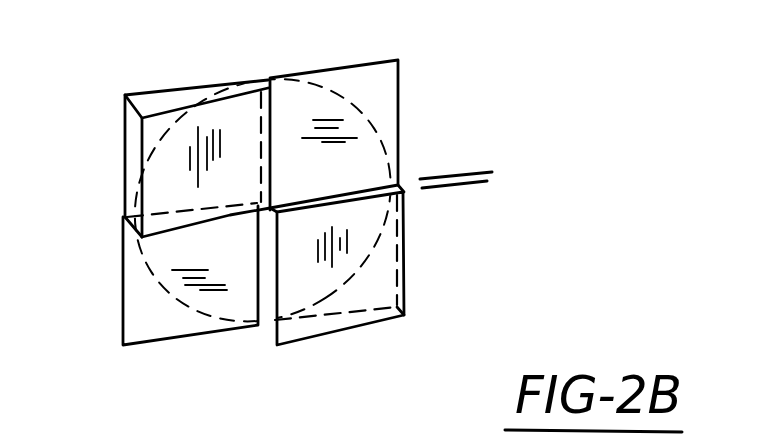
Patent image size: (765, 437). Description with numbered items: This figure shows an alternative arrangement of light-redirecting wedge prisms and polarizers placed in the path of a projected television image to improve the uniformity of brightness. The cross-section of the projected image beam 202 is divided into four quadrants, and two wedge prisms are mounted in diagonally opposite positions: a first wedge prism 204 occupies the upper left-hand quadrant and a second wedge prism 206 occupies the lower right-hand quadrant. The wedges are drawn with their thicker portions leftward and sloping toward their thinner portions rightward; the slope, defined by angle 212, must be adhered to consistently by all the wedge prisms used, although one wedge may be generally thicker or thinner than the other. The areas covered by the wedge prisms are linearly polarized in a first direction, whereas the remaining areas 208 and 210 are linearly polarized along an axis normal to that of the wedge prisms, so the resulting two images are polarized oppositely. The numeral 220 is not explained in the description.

The projected image beam 202 is at (362, 260).
The first wedge prism 204 is at (187, 93).
The second wedge prism 206 is at (319, 332).
The area 208 is at (375, 88).
The area 210 is at (157, 278).
The angle 212 is at (454, 148).
The beam footprint 220 is at (263, 234).